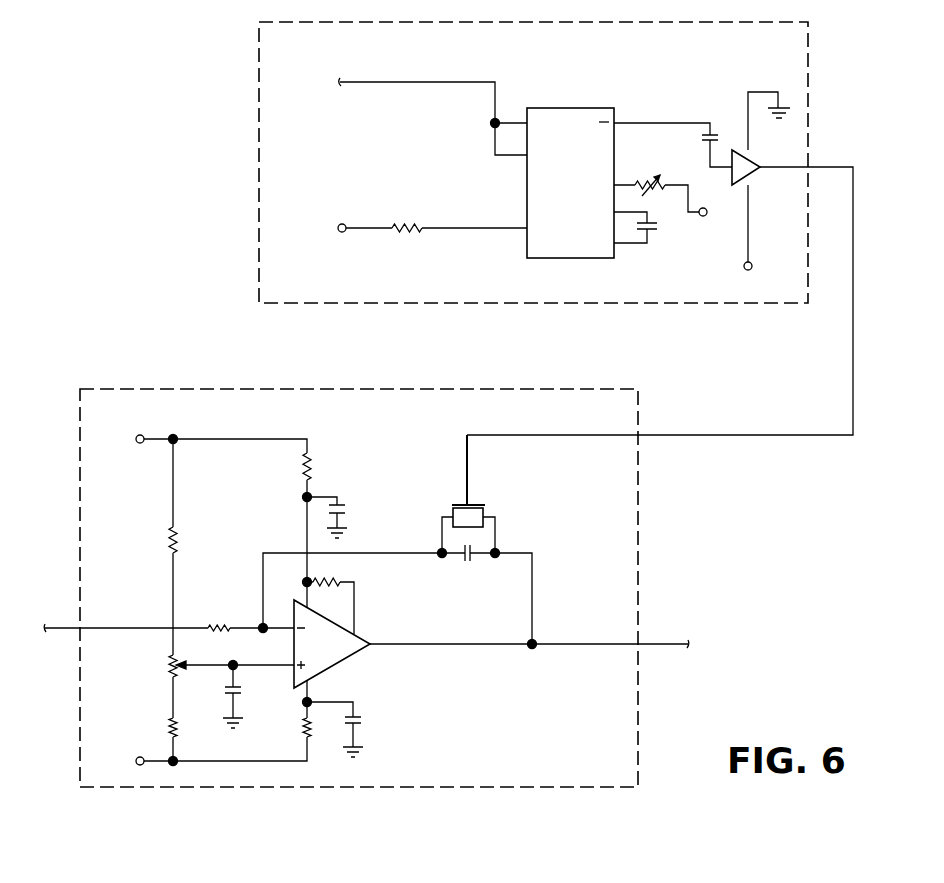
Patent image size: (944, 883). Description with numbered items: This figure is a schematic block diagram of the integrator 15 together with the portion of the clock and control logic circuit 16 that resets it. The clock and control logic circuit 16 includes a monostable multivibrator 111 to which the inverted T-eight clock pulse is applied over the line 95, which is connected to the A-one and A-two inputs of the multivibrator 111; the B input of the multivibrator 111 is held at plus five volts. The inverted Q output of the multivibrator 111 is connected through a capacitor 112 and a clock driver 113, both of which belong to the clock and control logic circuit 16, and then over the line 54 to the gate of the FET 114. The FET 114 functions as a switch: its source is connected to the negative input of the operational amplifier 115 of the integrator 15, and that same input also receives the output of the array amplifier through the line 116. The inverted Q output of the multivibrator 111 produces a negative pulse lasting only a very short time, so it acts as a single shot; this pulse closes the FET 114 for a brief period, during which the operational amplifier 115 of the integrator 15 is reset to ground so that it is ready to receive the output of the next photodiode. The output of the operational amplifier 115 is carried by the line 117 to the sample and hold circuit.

The clock and control logic circuit 16 is at (259, 165).
The integrator 15 is at (640, 558).
The line 95 is at (414, 83).
The monostable multivibrator 111 is at (556, 108).
The capacitor 112 is at (703, 136).
The clock driver 113 is at (749, 160).
The line 54 is at (853, 322).
The FET 114 is at (485, 508).
The operational amplifier 115 is at (344, 663).
The line 116 is at (118, 628).
The line 117 is at (572, 646).